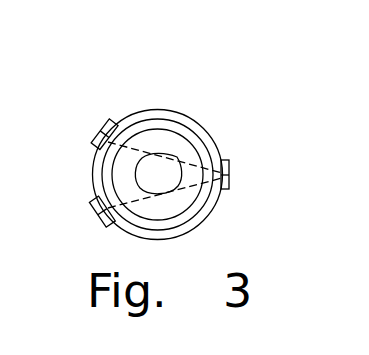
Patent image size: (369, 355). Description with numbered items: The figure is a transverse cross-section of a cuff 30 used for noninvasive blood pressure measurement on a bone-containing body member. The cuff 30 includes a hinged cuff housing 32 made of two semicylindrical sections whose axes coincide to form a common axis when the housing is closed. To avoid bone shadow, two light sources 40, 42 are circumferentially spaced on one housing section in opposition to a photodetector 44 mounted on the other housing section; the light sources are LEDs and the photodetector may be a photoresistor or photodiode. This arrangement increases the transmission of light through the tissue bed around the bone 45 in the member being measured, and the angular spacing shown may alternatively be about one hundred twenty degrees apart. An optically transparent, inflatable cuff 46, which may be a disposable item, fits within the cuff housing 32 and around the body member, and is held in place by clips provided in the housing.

The cuff 30 is at (242, 84).
The hinged cuff housing 32 is at (134, 106).
The light source 40 is at (92, 142).
The light source 42 is at (92, 201).
The photodetector 44 is at (229, 179).
The bone 45 is at (164, 166).
The inflatable cuff 46 is at (188, 122).